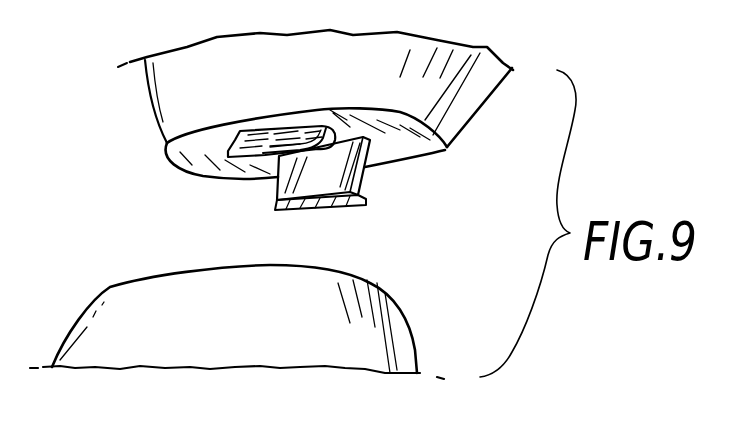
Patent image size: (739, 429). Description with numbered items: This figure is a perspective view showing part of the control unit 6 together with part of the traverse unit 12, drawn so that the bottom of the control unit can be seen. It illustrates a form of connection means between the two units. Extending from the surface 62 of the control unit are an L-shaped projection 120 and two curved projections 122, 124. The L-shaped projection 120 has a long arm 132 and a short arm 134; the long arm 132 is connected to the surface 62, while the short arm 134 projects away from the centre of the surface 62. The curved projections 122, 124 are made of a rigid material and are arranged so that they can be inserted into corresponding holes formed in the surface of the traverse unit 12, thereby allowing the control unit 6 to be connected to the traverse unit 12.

The upper housing part 6 is at (490, 117).
The traverse unit 12 is at (420, 317).
The surface of the control unit 62 is at (193, 143).
The L-shaped projection 120 is at (319, 198).
The curved projection 122 is at (307, 140).
The curved projection 124 is at (263, 140).
The long arm 132 is at (298, 188).
The short arm 134 is at (314, 207).